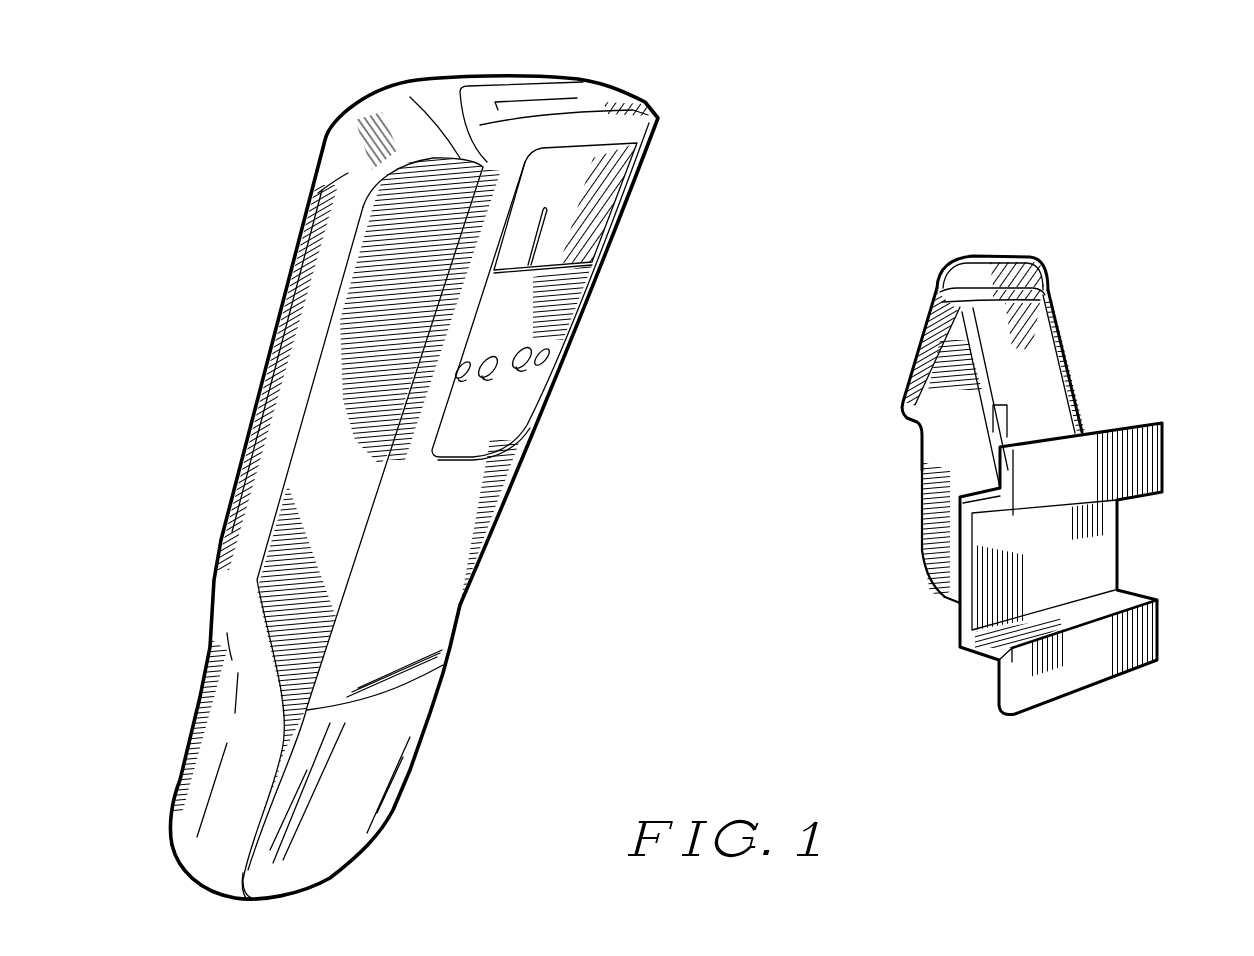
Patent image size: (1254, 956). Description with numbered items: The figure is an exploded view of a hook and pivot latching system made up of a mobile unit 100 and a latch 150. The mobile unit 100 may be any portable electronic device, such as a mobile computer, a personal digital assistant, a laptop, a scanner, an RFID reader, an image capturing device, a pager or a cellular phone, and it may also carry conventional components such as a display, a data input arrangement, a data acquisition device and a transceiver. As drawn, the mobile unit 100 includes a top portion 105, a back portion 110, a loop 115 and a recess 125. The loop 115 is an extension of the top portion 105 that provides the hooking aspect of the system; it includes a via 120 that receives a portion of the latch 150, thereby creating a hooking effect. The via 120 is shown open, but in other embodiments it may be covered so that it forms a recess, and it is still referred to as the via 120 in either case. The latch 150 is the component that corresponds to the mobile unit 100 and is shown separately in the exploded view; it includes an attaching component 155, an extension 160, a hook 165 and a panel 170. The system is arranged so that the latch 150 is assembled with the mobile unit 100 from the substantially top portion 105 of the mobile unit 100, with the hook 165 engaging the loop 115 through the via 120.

The mobile unit 100 is at (260, 207).
The top portion 105 is at (393, 105).
The back portion 110 is at (427, 623).
The loop 115 is at (620, 110).
The via 120 is at (547, 100).
The recess 125 is at (560, 205).
The latch 150 is at (1195, 367).
The attaching component 155 is at (1120, 553).
The extension 160 is at (918, 488).
The hook 165 is at (988, 258).
The panel 170 is at (940, 327).